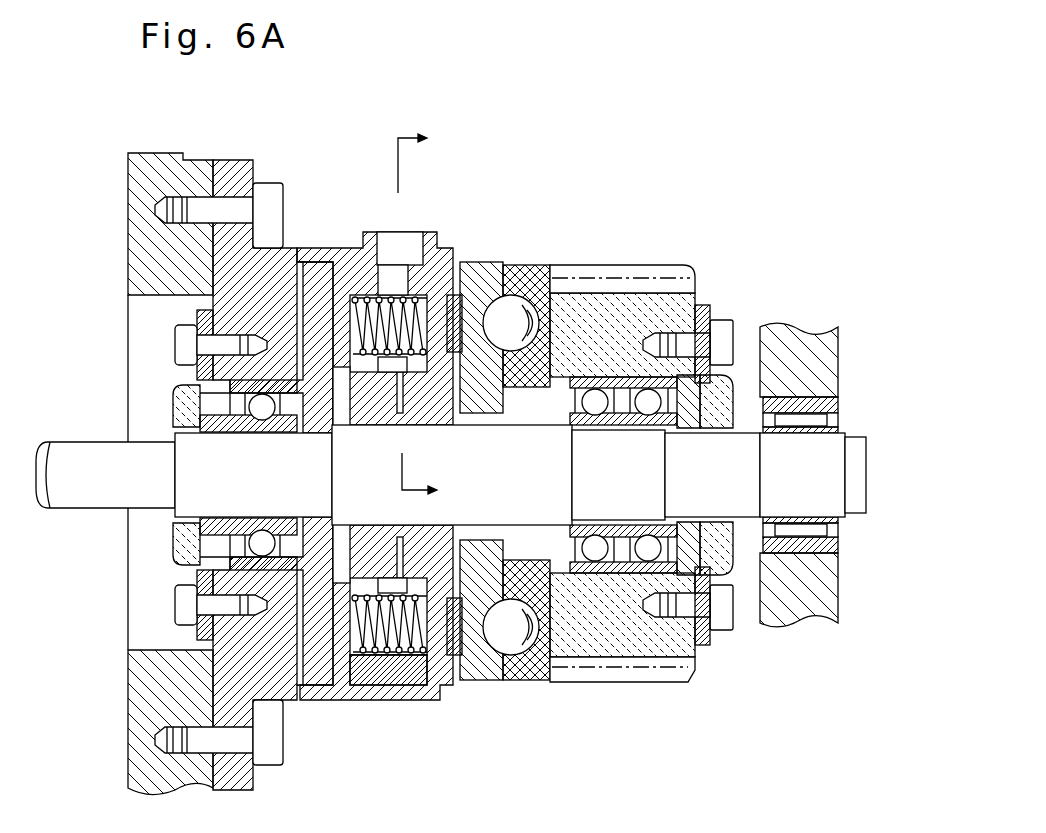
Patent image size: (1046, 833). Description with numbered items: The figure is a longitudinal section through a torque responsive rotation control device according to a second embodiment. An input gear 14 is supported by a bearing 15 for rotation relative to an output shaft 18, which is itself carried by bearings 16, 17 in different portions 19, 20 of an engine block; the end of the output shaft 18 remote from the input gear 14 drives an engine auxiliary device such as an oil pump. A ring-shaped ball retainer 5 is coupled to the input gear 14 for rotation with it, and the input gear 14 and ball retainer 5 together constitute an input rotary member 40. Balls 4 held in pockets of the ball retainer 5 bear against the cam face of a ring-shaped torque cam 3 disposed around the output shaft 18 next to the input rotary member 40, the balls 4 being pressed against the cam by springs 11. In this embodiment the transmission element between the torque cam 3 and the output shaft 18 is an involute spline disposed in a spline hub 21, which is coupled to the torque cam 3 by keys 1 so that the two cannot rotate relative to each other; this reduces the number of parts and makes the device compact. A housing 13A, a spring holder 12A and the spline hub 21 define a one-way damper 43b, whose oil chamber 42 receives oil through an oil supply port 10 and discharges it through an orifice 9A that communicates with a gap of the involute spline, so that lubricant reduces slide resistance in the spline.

The keys 1 is at (473, 367).
The torque cam 3 is at (502, 265).
The balls 4 is at (505, 632).
The ball retainer 5 is at (547, 667).
The orifice 9A is at (400, 653).
The oil supply port 10 is at (393, 242).
The springs 11 is at (350, 248).
The spring holder 12A is at (325, 640).
The housing 13A is at (273, 270).
The input gear 14 is at (618, 305).
The bearing 15 is at (703, 340).
The bearing 16 is at (833, 397).
The bearing 17 is at (197, 373).
The output shaft 18 is at (113, 498).
The engine block portion 19 is at (142, 238).
The engine block portion 20 is at (822, 575).
The spline hub 21 is at (433, 580).
The input rotary member 40 is at (645, 693).
The oil chamber 42 is at (388, 277).
The one-way damper 43b is at (388, 673).